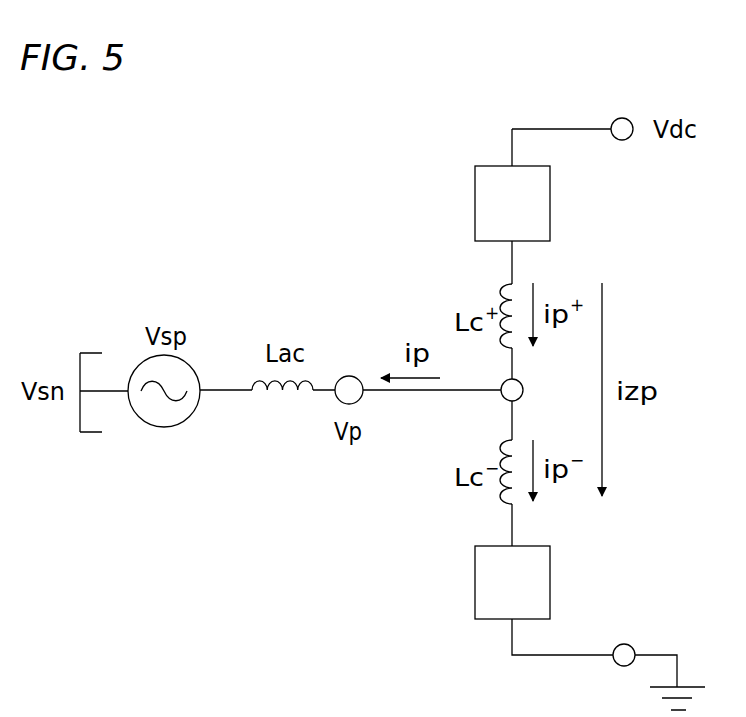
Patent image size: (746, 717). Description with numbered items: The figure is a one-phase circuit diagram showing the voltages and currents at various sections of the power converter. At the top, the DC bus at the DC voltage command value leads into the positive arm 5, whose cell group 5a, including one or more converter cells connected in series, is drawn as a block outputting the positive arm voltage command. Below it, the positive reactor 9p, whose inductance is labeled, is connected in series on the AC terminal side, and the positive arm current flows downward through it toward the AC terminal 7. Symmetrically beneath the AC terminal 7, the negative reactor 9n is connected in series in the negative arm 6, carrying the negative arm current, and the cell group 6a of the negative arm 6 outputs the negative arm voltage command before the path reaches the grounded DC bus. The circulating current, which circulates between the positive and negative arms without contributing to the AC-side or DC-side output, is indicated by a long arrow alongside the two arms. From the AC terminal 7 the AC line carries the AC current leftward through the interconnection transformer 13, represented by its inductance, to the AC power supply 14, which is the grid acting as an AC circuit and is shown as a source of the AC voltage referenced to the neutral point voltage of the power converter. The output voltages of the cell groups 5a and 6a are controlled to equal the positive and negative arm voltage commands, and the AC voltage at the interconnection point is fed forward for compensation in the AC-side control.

The positive arm 5 is at (405, 231).
The cell group 5a is at (475, 190).
The positive reactor 9p is at (505, 292).
The AC terminal 7 is at (524, 387).
The negative reactor 9n is at (505, 449).
The negative arm 6 is at (410, 533).
The cell group 6a is at (475, 577).
The interconnection transformer 13 is at (278, 399).
The AC power supply 14 is at (163, 428).